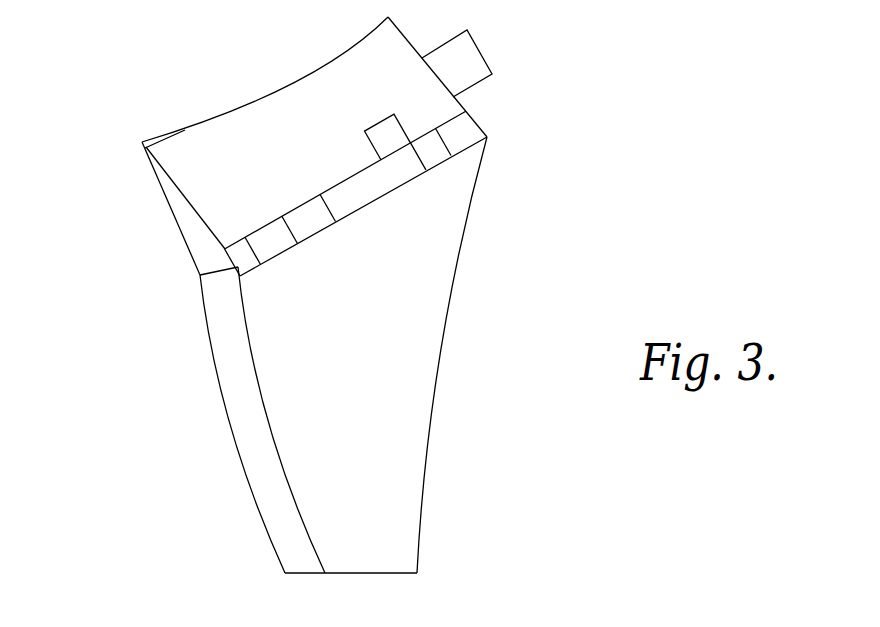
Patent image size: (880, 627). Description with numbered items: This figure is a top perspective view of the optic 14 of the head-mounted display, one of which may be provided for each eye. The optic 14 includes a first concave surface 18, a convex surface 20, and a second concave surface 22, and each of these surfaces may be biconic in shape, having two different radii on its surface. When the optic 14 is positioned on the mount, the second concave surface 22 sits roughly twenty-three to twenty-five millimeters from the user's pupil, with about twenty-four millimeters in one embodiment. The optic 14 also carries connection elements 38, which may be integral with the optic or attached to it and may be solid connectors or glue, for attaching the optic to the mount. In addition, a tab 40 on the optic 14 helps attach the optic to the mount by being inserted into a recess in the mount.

The optic 14 is at (123, 65).
The first concave surface 18 is at (282, 90).
The convex surface 20 is at (217, 377).
The second concave surface 22 is at (442, 338).
The connection elements 38 is at (432, 148).
The tab 40 is at (485, 62).